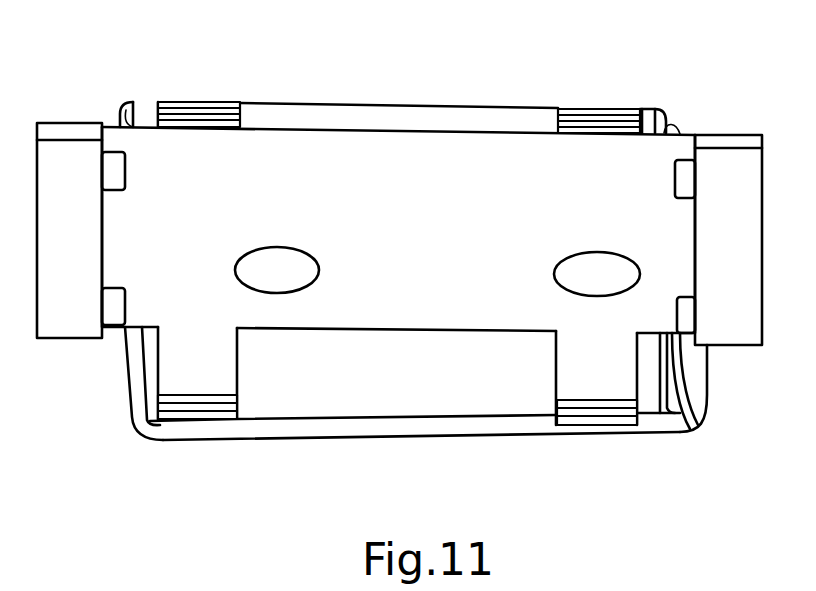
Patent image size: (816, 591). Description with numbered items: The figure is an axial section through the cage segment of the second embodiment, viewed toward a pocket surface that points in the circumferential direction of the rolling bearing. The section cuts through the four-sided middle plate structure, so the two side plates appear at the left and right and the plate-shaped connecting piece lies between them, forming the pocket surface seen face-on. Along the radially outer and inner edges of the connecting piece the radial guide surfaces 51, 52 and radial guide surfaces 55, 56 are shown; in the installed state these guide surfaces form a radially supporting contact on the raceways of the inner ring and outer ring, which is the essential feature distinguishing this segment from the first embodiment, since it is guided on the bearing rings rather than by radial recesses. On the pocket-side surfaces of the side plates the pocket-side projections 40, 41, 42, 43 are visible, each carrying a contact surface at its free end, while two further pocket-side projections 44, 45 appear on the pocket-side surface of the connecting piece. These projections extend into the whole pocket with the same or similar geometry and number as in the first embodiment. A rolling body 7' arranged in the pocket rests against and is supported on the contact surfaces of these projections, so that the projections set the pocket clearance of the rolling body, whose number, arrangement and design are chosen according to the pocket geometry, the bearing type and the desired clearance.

The rolling body 7' is at (400, 76).
The radial guide surface 51 is at (598, 109).
The radial guide surface 52 is at (198, 102).
The radial guide surface 55 is at (595, 430).
The radial guide surface 56 is at (194, 423).
The pocket-side projection 40 is at (674, 178).
The pocket-side projection 41 is at (676, 309).
The pocket-side projection 42 is at (126, 170).
The pocket-side projection 43 is at (127, 303).
The pocket-side projection 44 is at (556, 284).
The pocket-side projection 45 is at (280, 293).